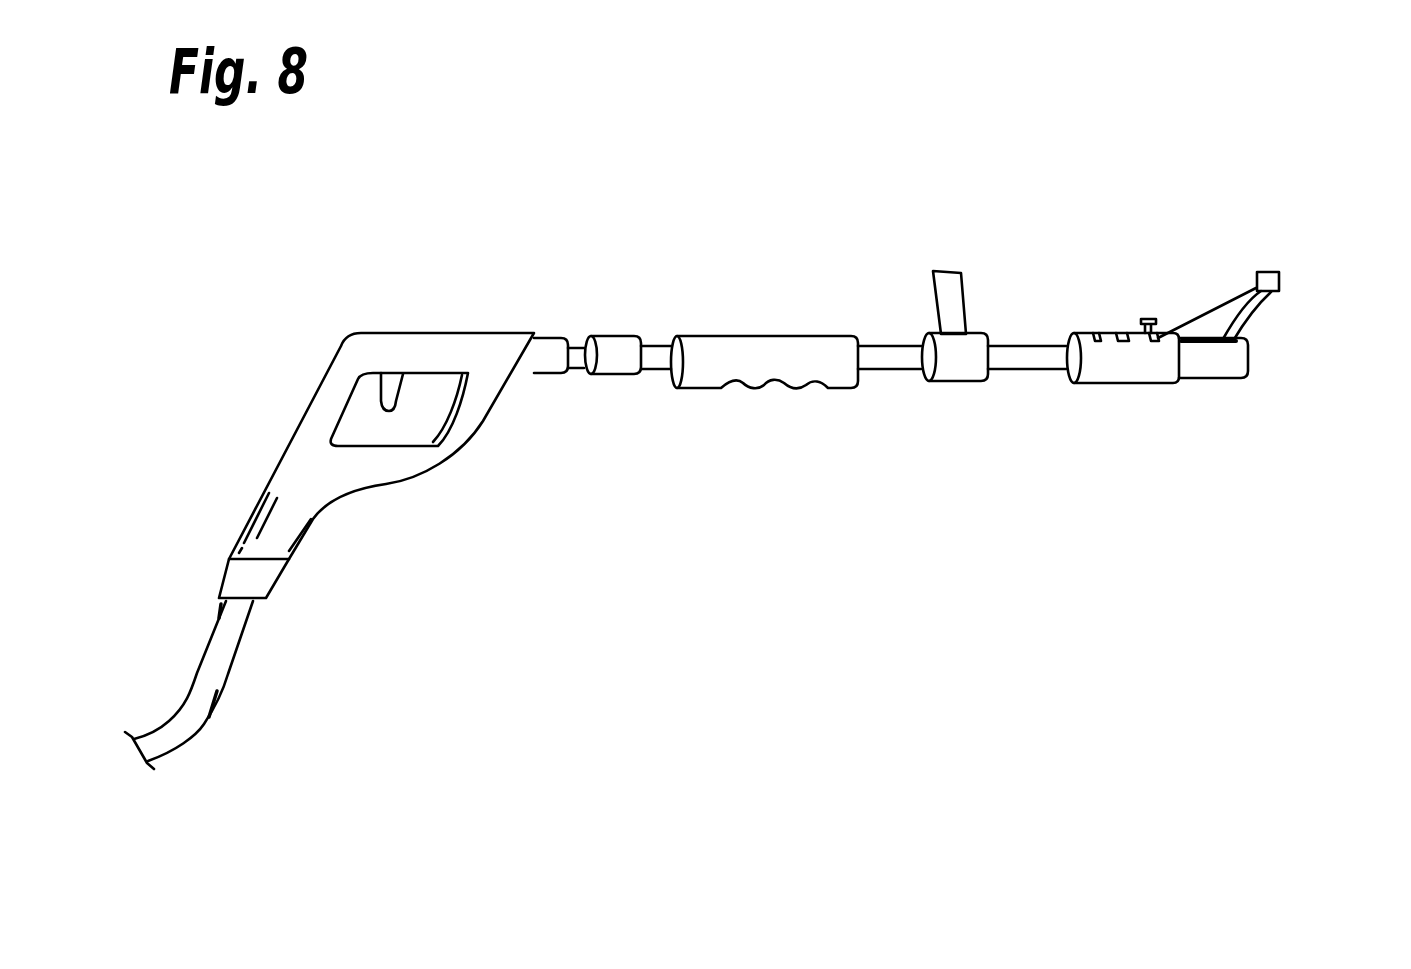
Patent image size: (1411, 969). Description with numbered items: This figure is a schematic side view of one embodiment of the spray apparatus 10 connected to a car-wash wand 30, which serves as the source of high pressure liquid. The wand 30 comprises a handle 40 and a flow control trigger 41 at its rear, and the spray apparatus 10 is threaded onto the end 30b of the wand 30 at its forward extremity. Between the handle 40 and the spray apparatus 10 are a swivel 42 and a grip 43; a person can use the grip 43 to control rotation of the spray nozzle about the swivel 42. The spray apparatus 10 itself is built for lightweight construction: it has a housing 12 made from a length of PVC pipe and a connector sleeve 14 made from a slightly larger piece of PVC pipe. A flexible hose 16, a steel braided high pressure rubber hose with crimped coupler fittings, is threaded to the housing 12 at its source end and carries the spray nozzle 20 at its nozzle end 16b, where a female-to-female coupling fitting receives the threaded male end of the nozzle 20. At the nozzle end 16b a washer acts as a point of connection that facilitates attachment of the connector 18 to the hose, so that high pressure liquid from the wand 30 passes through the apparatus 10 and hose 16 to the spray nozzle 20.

The spray apparatus 10 is at (1235, 339).
The housing 12 is at (1233, 377).
The connector sleeve 14 is at (1120, 382).
The flexible hose 16 is at (1250, 322).
The nozzle end 16b is at (1270, 298).
The connector 18 is at (1232, 305).
The spray nozzle 20 is at (1272, 270).
The car-wash wand 30 is at (835, 297).
The end of the wand 30b is at (1032, 372).
The handle 40 is at (385, 332).
The flow control trigger 41 is at (397, 392).
The swivel 42 is at (608, 335).
The grip 43 is at (973, 295).